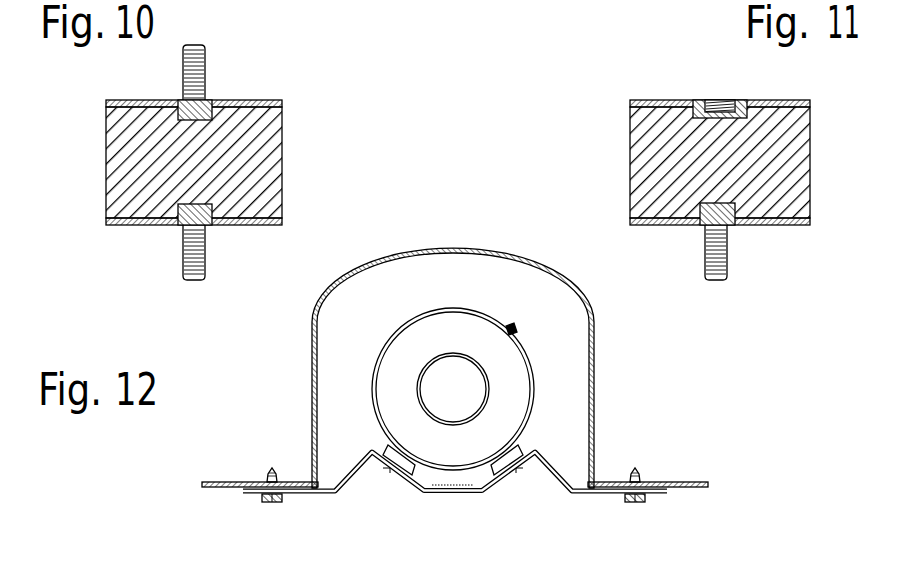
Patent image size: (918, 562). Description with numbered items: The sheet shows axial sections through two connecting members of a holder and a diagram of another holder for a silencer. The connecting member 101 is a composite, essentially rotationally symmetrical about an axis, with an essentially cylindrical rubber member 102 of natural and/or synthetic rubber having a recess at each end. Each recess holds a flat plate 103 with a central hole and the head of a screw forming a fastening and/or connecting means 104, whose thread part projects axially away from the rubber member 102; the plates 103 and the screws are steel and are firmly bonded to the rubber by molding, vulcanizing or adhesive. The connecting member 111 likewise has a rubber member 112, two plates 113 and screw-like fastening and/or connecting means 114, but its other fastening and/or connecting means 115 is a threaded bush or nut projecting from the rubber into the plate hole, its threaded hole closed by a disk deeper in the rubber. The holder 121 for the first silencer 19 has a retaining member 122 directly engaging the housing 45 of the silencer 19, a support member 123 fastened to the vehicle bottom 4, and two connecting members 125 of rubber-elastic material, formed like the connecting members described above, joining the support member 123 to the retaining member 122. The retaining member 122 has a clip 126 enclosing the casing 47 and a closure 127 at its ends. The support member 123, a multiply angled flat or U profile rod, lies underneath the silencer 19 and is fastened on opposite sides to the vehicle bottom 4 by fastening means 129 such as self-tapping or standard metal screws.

In FIG. 10, the connecting member 101 is at (106, 115).
In FIG. 10, the rubber member 102 is at (106, 165).
In FIG. 10, the flat plate 103 is at (236, 100).
In FIG. 10, the fastening and/or connecting means 104 is at (206, 68).
In FIG. 11, the connecting member 111 is at (630, 118).
In FIG. 11, the rubber member 112 is at (630, 163).
In FIG. 11, the plate 113 is at (700, 100).
In FIG. 11, the fastening and/or connecting means 114 is at (727, 265).
In FIG. 11, the fastening and/or connecting means 115 is at (738, 100).
In FIG. 12, the vehicle bottom 4 is at (226, 482).
In FIG. 12, the first silencer 19 is at (429, 368).
In FIG. 12, the housing 45 is at (384, 368).
In FIG. 12, the casing 47 is at (377, 401).
In FIG. 12, the holder 121 is at (341, 467).
In FIG. 12, the retaining member 122 is at (453, 368).
In FIG. 12, the support member 123 is at (340, 484).
In FIG. 12, the connecting member 125 is at (385, 444).
In FIG. 12, the clip 126 is at (468, 309).
In FIG. 12, the closure 127 is at (519, 330).
In FIG. 12, the fastening means 129 is at (278, 496).